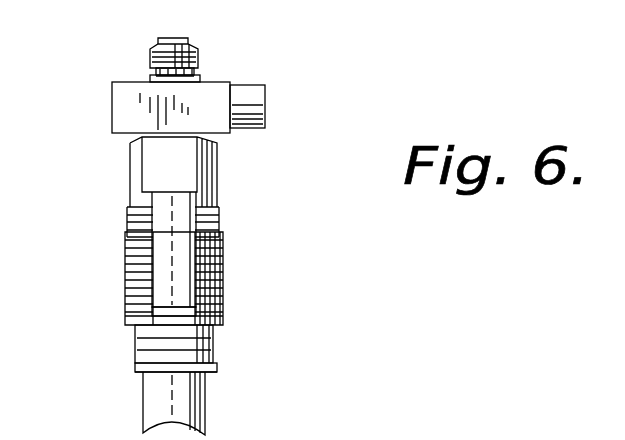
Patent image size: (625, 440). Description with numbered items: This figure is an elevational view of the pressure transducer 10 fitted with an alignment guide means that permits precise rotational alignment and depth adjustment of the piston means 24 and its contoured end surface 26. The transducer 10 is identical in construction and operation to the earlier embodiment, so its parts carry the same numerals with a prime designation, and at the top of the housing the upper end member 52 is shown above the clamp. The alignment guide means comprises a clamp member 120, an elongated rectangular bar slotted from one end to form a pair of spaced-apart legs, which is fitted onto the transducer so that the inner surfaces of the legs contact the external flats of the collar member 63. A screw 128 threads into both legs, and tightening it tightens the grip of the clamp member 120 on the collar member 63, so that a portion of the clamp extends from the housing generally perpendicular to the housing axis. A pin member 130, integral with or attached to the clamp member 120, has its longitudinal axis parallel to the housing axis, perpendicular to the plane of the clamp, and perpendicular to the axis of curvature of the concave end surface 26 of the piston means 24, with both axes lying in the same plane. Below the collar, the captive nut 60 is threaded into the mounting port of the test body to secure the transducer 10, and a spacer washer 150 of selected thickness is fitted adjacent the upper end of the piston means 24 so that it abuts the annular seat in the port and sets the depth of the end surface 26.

The cap 52 is at (152, 60).
The collar member 63 is at (283, 27).
The clamp member 120 is at (123, 104).
The screw 128 is at (258, 96).
The captive nut 60 is at (299, 167).
The pin member 130 is at (165, 258).
The pressure transducer 10 is at (232, 266).
The spacer washer 150 is at (214, 362).
The piston means 24 is at (146, 385).
The contoured end surface 26 is at (190, 426).